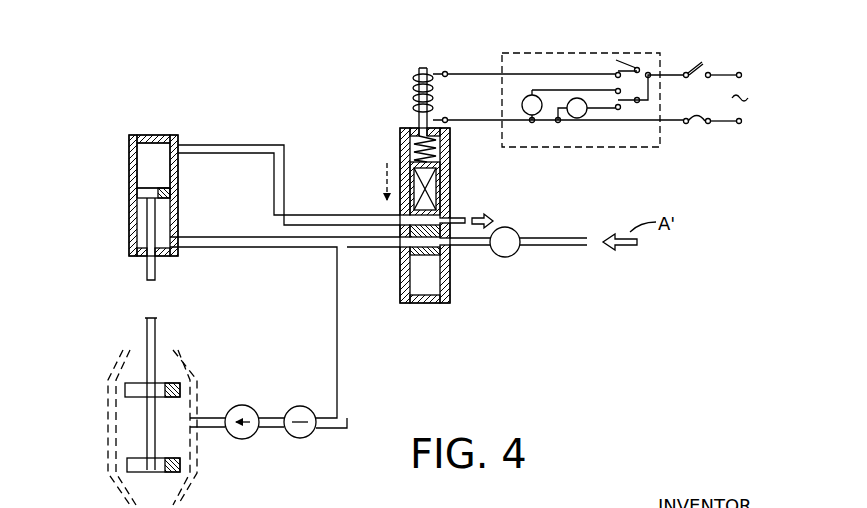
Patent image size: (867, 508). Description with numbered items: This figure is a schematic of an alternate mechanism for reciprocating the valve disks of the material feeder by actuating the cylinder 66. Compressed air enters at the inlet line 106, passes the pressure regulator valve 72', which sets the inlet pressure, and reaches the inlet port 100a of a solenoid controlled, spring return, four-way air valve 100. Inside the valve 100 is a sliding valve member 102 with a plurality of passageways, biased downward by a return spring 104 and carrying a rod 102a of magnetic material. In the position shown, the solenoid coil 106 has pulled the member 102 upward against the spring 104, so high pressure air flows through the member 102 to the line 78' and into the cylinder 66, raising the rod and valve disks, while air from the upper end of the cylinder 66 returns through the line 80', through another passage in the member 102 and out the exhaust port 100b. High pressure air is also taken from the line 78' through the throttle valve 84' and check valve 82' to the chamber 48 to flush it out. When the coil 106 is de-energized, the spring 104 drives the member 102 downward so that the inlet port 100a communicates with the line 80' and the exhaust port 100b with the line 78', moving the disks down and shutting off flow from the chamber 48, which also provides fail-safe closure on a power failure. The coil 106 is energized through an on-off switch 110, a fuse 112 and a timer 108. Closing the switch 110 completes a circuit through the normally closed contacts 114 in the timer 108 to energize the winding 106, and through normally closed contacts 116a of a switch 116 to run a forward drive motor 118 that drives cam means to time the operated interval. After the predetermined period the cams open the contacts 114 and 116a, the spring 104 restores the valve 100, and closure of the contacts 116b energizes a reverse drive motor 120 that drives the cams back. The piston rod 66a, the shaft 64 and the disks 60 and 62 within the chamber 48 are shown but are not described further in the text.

The chamber 48 is at (200, 484).
The upper disk 60 is at (162, 382).
The lower disk 62 is at (142, 0).
The shaft 64 is at (150, 408).
The cylinder 66 is at (129, 175).
The piston rod 66a is at (148, 268).
The pressure regulator valve 72' is at (523, 253).
The line 78' is at (285, 332).
The line 80' is at (289, 174).
The check valve 82' is at (237, 401).
The throttle valve 84' is at (319, 442).
The 4-way air valve 100 is at (453, 288).
The inlet port 100a is at (456, 248).
The exhaust port 100b is at (457, 217).
The sliding valve member 102 is at (432, 208).
The rod 102a is at (418, 128).
The return spring 104 is at (445, 155).
The solenoid coil 106 is at (413, 85).
The timer 108 is at (523, 52).
The on-off switch 110 is at (698, 62).
The fuse 112 is at (703, 128).
The normally closed contacts 114 is at (617, 72).
The switch 116 is at (644, 112).
The normally closed contacts 116a is at (620, 110).
The contacts 116b is at (616, 90).
The forward drive motor 118 is at (588, 120).
The reverse drive motor 120 is at (522, 105).